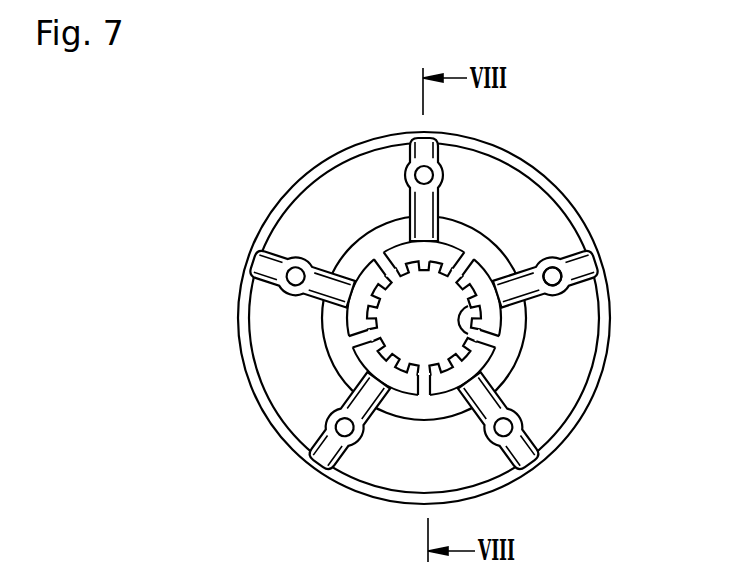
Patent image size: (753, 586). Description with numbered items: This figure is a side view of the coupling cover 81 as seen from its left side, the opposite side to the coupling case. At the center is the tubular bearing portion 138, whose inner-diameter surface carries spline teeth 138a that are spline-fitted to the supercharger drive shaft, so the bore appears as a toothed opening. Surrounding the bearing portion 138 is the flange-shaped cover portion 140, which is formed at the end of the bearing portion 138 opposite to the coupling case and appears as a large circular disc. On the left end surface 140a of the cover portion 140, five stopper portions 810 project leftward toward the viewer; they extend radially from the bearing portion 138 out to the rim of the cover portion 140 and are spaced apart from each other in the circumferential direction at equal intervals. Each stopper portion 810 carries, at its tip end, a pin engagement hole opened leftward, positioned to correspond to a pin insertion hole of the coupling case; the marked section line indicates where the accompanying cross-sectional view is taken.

The coupling cover 81 is at (143, 387).
The tubular bearing portion 138 is at (415, 352).
The spline teeth 138a is at (475, 342).
The cover portion 140 is at (415, 318).
The left end surface 140a is at (278, 330).
The stopper portion 810 is at (586, 251).